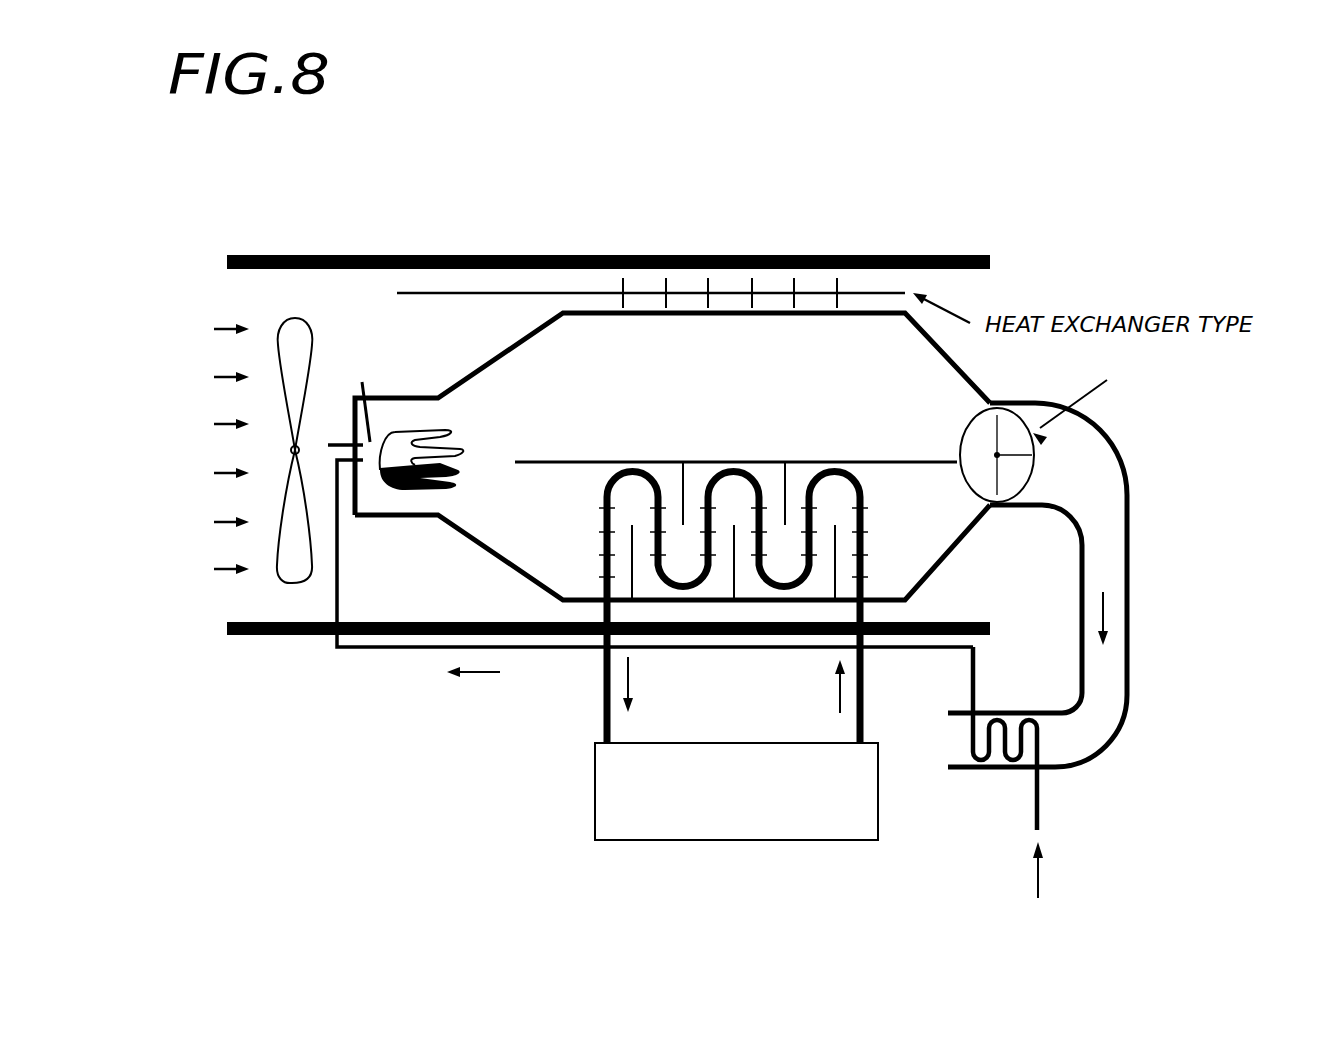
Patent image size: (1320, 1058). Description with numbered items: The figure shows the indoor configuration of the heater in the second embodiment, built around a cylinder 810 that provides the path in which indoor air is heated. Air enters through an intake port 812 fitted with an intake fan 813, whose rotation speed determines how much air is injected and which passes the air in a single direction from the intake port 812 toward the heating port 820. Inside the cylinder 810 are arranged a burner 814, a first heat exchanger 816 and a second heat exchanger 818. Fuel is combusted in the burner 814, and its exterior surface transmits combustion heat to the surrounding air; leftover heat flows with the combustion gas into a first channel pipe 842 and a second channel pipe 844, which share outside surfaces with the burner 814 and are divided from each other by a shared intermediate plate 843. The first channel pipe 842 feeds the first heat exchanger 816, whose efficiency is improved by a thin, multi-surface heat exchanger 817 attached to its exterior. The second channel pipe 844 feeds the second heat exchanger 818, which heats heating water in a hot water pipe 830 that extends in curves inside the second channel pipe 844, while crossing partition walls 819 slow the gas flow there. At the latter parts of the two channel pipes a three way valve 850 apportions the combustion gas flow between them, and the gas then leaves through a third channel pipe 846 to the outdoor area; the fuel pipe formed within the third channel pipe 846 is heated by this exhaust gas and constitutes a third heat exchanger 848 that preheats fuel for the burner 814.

The cylinder 810 is at (402, 256).
The intake port 812 is at (220, 287).
The intake fan 813 is at (291, 585).
The burner 814 is at (378, 502).
The first heat exchanger 816 is at (533, 311).
The heat exchanger 817 is at (650, 290).
The second heat exchanger 818 is at (536, 585).
The partition walls 819 is at (605, 625).
The heating port 820 is at (990, 285).
The hot water pipe 830 is at (606, 705).
The first channel pipe 842 is at (757, 365).
The intermediate plate 843 is at (877, 462).
The second channel pipe 844 is at (413, 640).
The third channel pipe 846 is at (1118, 528).
The third heat exchanger 848 is at (972, 745).
The three way valve 850 is at (1030, 473).